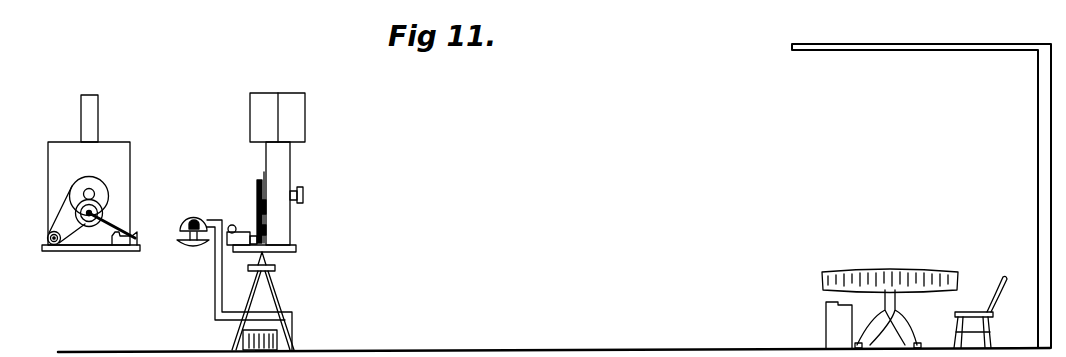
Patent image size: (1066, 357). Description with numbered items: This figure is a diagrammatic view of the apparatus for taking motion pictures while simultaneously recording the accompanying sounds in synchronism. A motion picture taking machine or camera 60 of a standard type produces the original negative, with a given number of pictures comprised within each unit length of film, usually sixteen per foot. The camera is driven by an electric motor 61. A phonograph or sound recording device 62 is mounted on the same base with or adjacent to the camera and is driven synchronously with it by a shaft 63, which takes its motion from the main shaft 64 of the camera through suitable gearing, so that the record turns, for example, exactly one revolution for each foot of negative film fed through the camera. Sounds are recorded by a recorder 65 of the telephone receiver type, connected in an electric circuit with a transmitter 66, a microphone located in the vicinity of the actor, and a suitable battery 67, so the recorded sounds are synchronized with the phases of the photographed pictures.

The motion picture taking machine 60 is at (57, 169).
The electric motor 61 is at (47, 237).
The sound recording device 62 is at (125, 246).
The shaft 63 is at (127, 231).
The main shaft 64 is at (89, 216).
The recorder 65 is at (195, 219).
The transmitter 66 is at (851, 307).
The battery 67 is at (243, 339).